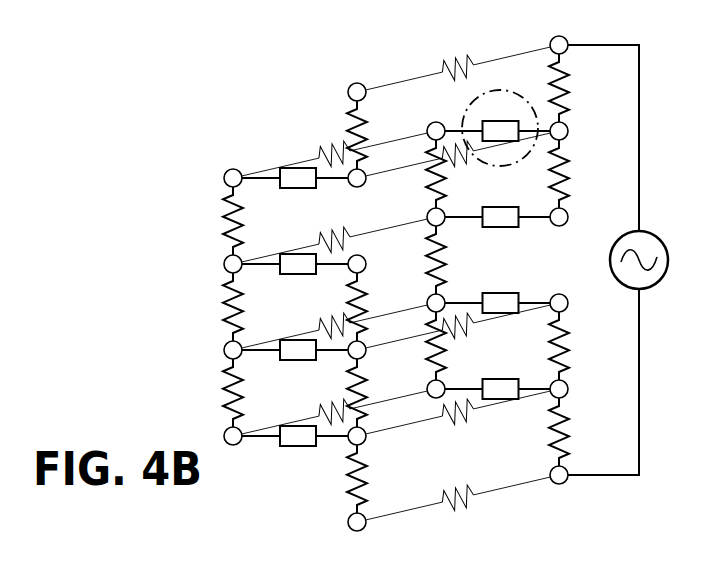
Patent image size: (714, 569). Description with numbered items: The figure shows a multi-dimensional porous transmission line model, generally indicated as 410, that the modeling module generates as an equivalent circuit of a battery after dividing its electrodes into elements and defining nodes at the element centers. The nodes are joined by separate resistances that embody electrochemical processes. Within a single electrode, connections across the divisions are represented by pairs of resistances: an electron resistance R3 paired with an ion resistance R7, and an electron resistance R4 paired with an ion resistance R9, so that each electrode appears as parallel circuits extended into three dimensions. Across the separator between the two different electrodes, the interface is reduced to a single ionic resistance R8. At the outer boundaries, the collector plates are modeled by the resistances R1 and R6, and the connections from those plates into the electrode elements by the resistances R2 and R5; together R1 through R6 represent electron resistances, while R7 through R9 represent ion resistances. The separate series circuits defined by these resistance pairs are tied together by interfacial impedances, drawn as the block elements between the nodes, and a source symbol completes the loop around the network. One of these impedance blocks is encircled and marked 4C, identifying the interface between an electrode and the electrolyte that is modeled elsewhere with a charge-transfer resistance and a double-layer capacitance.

The resistor network model 410 is at (257, 95).
The collector plate resistance R1 is at (443, 63).
The electrode connection resistance R2 is at (371, 125).
The electron resistance within same electrode R3 is at (577, 191).
The electron resistance within same electrode R4 is at (377, 301).
The electrode connection resistance R5 is at (577, 447).
The collector plate resistance R6 is at (468, 491).
The ionic resistance within same electrode R7 is at (324, 150).
The ionic resistance across separator R8 is at (223, 219).
The ionic resistance within same electrode R9 is at (223, 304).
The detail region shown in FIG. 4C is at (495, 89).